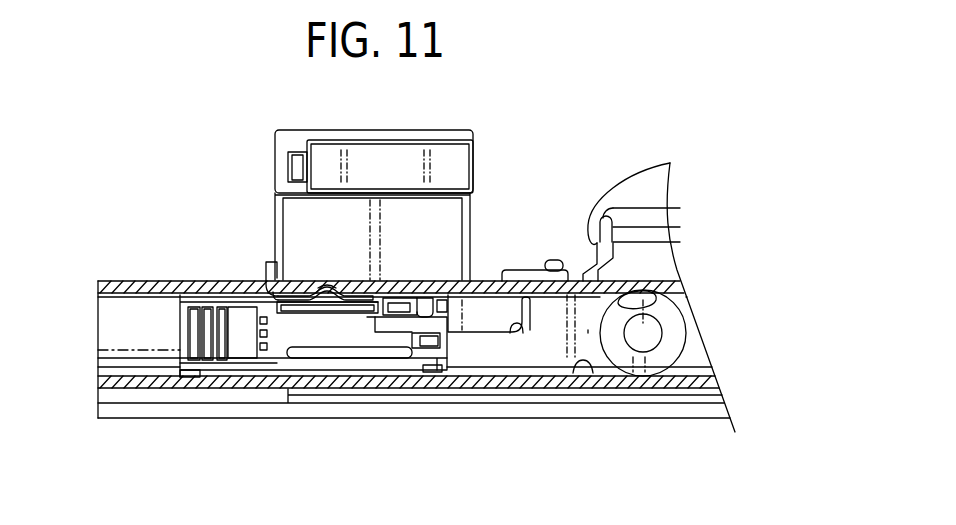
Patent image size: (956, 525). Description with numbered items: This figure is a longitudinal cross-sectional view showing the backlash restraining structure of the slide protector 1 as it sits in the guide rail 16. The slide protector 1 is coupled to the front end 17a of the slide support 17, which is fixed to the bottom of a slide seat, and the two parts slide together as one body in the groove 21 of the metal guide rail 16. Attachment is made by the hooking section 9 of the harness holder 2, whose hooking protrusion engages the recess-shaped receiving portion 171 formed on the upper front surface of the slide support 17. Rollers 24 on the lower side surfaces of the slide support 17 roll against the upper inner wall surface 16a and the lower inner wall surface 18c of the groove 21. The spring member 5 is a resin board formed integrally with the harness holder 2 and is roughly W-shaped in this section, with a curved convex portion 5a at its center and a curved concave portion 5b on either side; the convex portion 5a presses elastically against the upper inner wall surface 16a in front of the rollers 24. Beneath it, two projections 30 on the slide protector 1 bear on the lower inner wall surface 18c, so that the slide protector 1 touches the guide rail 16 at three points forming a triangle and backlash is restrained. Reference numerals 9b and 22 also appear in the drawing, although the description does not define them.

The slide protector 1 is at (452, 131).
The harness holder 2 is at (322, 336).
The spring member 5 is at (325, 284).
The curved convex portion 5a is at (332, 282).
The curved concave portion 5b is at (297, 287).
The hooking section 9 is at (480, 313).
The holder engaging portion 9b is at (389, 300).
The guide rail 16 is at (150, 279).
The upper inner wall surface 16a is at (618, 298).
The slide support 17 is at (588, 330).
The front end 17a is at (588, 330).
The receiving portion 171 is at (522, 333).
The lower inner wall surface 18c is at (583, 362).
The groove 21 is at (117, 341).
The hook 22 is at (418, 298).
The roller 24 is at (672, 336).
The projection 30 is at (190, 377).